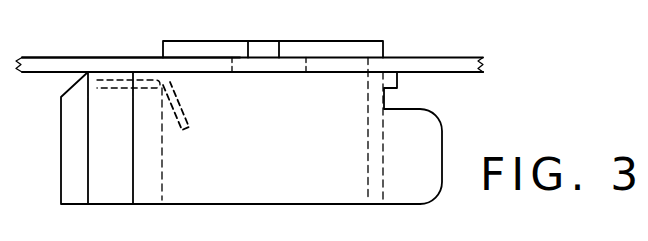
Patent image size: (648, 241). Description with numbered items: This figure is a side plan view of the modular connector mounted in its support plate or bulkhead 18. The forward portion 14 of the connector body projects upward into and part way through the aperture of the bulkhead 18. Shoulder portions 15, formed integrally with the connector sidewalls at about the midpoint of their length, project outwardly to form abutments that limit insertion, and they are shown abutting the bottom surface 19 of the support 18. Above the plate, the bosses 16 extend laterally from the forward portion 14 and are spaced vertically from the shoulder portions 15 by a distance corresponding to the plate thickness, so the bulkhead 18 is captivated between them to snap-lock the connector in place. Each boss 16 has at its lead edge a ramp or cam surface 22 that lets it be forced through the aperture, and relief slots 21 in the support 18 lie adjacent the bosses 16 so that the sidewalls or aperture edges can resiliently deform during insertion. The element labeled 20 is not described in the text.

The forward portion 14 is at (188, 40).
The shoulder portions 15 is at (148, 72).
The bosses 16 is at (281, 50).
The support plate or bulkhead 18 is at (422, 57).
The bottom surface 19 is at (334, 77).
The panel top surface 20 is at (137, 56).
The relief slots 21 is at (266, 67).
The ramp or cam surface 22 is at (266, 50).